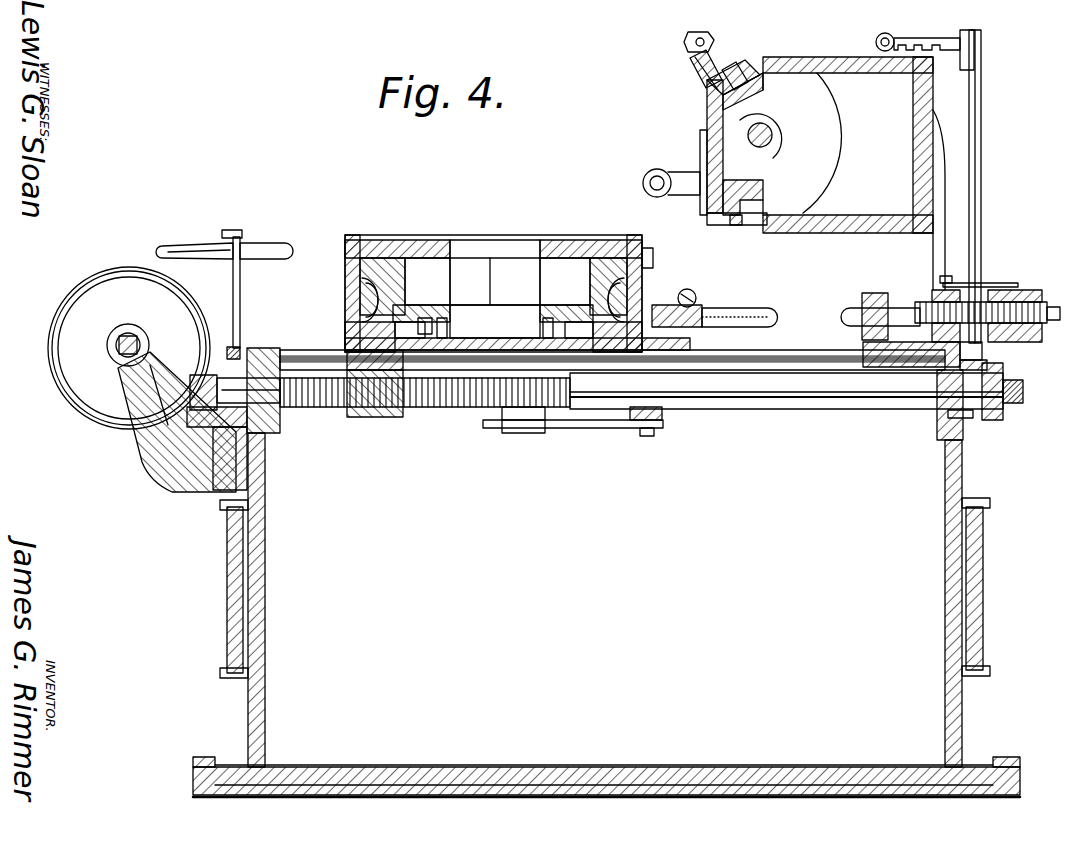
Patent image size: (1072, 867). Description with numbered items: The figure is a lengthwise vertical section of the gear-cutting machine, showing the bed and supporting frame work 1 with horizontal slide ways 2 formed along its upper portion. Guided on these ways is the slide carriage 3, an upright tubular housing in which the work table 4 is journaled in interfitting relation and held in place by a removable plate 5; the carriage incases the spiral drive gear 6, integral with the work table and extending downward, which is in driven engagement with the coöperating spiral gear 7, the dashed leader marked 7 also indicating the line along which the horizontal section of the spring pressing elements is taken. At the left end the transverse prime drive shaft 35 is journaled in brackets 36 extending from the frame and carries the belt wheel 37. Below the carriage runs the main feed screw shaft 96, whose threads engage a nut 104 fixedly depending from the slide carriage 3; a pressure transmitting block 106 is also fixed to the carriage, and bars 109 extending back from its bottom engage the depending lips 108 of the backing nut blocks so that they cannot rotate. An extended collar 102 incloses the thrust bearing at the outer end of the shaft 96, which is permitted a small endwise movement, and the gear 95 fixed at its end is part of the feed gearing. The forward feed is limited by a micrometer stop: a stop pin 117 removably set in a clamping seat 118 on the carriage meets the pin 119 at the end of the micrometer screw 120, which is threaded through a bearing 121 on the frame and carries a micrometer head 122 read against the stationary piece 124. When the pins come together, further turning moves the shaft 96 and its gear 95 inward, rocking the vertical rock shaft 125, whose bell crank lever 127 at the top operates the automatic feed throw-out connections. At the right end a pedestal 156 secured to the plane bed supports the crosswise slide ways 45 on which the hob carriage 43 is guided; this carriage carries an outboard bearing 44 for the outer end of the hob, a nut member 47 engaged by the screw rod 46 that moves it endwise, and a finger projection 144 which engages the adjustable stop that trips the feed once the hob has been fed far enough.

The bed and supporting frame work 1 is at (283, 433).
The horizontal slide ways 2 is at (471, 352).
The slide carriage 3 is at (350, 287).
The work table 4 is at (385, 258).
The removable plate 5 is at (426, 352).
The spiral drive gear 6 is at (622, 318).
The spiral gear 7 is at (1026, 396).
The transverse shaft 35 is at (108, 345).
The brackets 36 is at (121, 367).
The belt wheel 37 is at (50, 372).
The hob carriage 43 is at (707, 135).
The outboard bearing 44 is at (652, 193).
The slide ways 45 is at (708, 106).
The screw rod 46 is at (776, 135).
The nut member 47 is at (770, 152).
The gear 95 is at (998, 418).
The main feed screw shaft 96 is at (776, 410).
The extended collar 102 is at (232, 346).
The nut 104 is at (396, 418).
The pressure transmitting block 106 is at (660, 418).
The depending lips 108 is at (522, 433).
The bars 109 is at (605, 430).
The stop pin 117 is at (746, 318).
The clamping seat 118 is at (692, 303).
The pin 119 is at (860, 317).
The micrometer screw 120 is at (1030, 300).
The bearing 121 is at (943, 333).
The micrometer head 122 is at (987, 327).
The stationary piece 124 is at (985, 290).
The vertical rock shaft 125 is at (981, 114).
The bell crank lever 127 is at (875, 42).
The finger projection 144 is at (688, 42).
The pedestal 156 is at (935, 138).